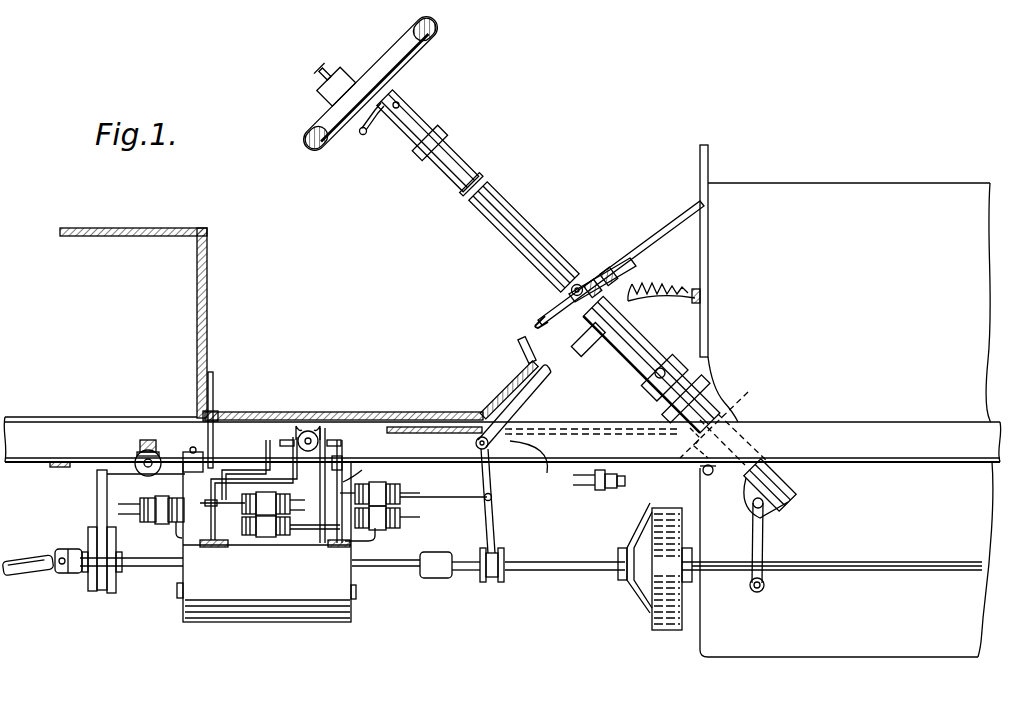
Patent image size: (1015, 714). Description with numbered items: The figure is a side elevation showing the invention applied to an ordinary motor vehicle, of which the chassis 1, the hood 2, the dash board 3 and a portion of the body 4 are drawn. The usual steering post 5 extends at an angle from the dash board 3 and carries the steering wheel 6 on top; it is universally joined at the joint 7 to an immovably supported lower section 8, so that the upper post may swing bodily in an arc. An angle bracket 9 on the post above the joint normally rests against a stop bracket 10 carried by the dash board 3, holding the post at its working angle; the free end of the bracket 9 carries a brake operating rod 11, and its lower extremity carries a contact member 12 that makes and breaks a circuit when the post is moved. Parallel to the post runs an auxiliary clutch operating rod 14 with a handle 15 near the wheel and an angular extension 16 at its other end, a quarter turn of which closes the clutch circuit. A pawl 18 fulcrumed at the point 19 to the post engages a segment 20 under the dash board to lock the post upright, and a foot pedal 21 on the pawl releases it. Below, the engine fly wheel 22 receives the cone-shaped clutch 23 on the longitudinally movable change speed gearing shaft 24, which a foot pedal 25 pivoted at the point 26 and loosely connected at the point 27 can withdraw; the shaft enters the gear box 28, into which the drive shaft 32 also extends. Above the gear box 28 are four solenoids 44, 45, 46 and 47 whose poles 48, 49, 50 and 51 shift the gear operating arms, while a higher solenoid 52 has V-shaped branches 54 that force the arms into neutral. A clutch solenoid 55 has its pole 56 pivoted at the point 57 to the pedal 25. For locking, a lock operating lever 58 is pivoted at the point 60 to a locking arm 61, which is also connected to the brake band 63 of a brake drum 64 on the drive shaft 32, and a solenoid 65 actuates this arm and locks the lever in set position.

The chassis 1 is at (545, 430).
The hood 2 is at (772, 186).
The dash board 3 is at (699, 179).
The body 4 is at (293, 411).
The steering post 5 is at (478, 164).
The steering wheel 6 is at (400, 61).
The universal joint 7 is at (663, 366).
The lower section 8 is at (752, 480).
The angle bracket 9 is at (630, 378).
The stop bracket 10 is at (590, 353).
The brake operating rod 11 is at (430, 421).
The contact member 12 is at (697, 471).
The auxiliary clutch operating rod 14 is at (472, 196).
The handle 15 is at (362, 136).
The angular extension 16 is at (748, 406).
The pawl 18 is at (626, 260).
The fulcrum 19 is at (579, 282).
The segment 20 is at (658, 297).
The foot pedal 21 is at (552, 309).
The fly wheel 22 is at (668, 630).
The cone-shaped clutch 23 is at (640, 596).
The change speed gearing shaft 24 is at (556, 570).
The foot pedal 25 is at (520, 350).
The pivot 26 is at (590, 478).
The loose connection 27 is at (501, 549).
The gear box 28 is at (345, 581).
The drive shaft 32 is at (151, 568).
The solenoid 44 is at (245, 526).
The solenoid 45 is at (285, 538).
The solenoid 46 is at (386, 529).
The solenoid 47 is at (144, 523).
The pole 48 is at (223, 497).
The pole 49 is at (314, 531).
The pole 50 is at (350, 483).
The pole 51 is at (268, 437).
The solenoid 52 is at (316, 430).
The branched extensions 54 is at (328, 433).
The solenoid 55 is at (401, 489).
The pole 56 is at (450, 498).
The pivot 57 is at (494, 497).
The lock operating lever 58 is at (219, 433).
The pivot 60 is at (204, 454).
The locking arm 61 is at (242, 468).
The brake band 63 is at (100, 492).
The brake drum 64 is at (104, 596).
The solenoid 65 is at (143, 458).